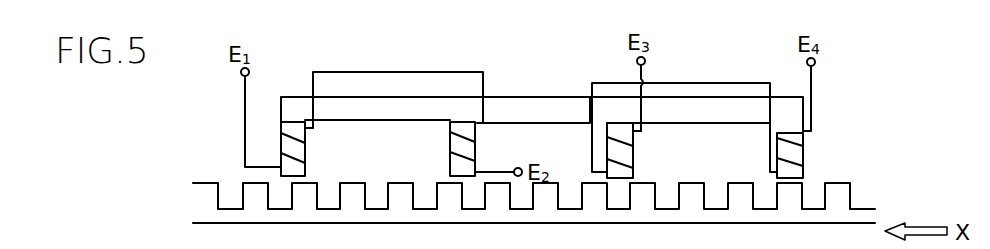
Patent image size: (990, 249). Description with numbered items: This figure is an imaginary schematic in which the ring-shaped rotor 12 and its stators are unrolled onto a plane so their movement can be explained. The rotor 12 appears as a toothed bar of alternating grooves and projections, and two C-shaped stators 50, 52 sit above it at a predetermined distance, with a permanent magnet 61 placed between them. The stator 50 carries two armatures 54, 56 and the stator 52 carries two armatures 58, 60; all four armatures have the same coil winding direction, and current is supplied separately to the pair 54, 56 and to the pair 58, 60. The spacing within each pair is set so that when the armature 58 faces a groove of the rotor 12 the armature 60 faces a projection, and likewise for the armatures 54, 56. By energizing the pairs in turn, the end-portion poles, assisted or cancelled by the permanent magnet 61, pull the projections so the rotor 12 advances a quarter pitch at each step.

The rotor 12 is at (852, 200).
The stator 50 is at (381, 108).
The stator 52 is at (704, 110).
The armature 54 is at (305, 152).
The armature 56 is at (475, 145).
The armature 58 is at (633, 158).
The armature 60 is at (803, 152).
The permanent magnet 61 is at (547, 97).